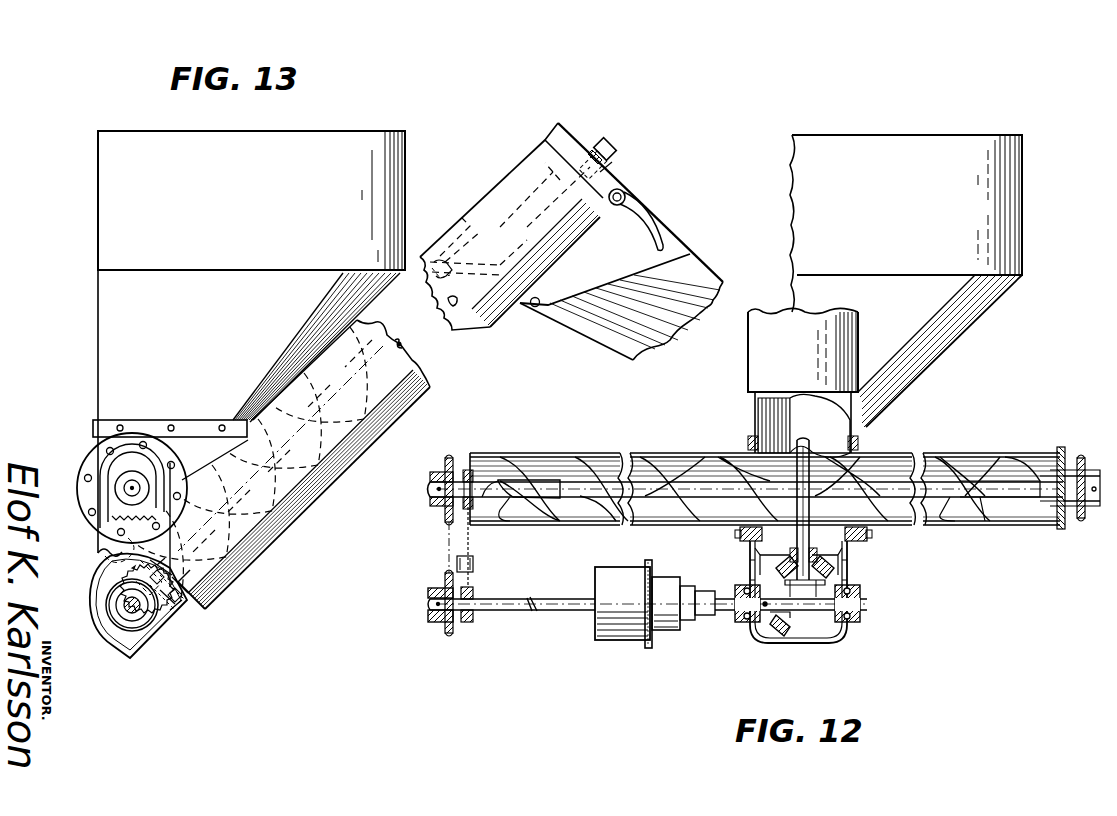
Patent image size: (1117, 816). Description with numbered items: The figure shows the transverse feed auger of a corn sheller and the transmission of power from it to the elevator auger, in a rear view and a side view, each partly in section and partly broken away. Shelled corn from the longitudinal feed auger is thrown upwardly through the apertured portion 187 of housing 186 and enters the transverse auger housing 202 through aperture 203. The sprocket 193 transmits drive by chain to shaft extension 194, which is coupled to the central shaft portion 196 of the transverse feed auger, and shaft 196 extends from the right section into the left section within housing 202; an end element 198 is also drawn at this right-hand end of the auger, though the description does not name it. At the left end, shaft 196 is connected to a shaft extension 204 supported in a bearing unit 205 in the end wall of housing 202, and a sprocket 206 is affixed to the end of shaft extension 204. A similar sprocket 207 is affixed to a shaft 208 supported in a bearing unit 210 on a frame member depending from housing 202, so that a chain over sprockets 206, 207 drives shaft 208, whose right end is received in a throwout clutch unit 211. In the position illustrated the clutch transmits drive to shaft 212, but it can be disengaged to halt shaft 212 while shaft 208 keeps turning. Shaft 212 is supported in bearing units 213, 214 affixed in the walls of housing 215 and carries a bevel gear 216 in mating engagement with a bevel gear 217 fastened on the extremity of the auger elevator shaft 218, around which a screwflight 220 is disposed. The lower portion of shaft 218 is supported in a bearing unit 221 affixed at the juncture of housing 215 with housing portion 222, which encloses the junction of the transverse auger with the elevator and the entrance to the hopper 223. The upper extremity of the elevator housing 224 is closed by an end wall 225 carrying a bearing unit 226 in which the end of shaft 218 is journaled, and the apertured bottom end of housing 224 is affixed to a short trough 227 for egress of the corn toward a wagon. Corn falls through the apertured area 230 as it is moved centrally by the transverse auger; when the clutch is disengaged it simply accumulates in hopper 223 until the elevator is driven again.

In FIG. 12, the housing 186 is at (988, 455).
In FIG. 12, the apertured portion 187 is at (995, 512).
In FIG. 12, the sprocket 193 is at (1085, 462).
In FIG. 12, the shaft extension 194 is at (1040, 497).
In FIG. 12, the central shaft portion 196 is at (652, 456).
In FIG. 12, the end plate 198 is at (1058, 460).
In FIG. 12, the housing 202 is at (552, 456).
In FIG. 12, the aperture 203 is at (535, 505).
In FIG. 12, the shaft extension 204 is at (500, 468).
In FIG. 12, the bearing unit 205 is at (455, 470).
In FIG. 13, the sprocket 206 is at (108, 478).
In FIG. 12, the sprocket 206 is at (445, 512).
In FIG. 12, the sprocket 207 is at (449, 637).
In FIG. 13, the shaft 208 is at (120, 625).
In FIG. 12, the shaft 208 is at (548, 609).
In FIG. 12, the bearing unit 210 is at (478, 588).
In FIG. 12, the throwout clutch unit 211 is at (628, 640).
In FIG. 12, the shaft 212 is at (720, 605).
In FIG. 12, the bearing unit 213 is at (745, 625).
In FIG. 12, the bearing unit 214 is at (852, 625).
In FIG. 12, the housing 215 is at (818, 642).
In FIG. 13, the bevel gear 216 is at (152, 640).
In FIG. 12, the bevel gear 216 is at (780, 632).
In FIG. 13, the bevel gear 217 is at (180, 612).
In FIG. 12, the bevel gear 217 is at (825, 580).
In FIG. 13, the auger elevator shaft 218 is at (340, 470).
In FIG. 12, the auger elevator shaft 218 is at (818, 440).
In FIG. 13, the screwflight 220 is at (428, 383).
In FIG. 12, the screwflight 220 is at (872, 450).
In FIG. 13, the bearing unit 221 is at (215, 600).
In FIG. 12, the bearing unit 221 is at (848, 565).
In FIG. 12, the housing portion 222 is at (752, 541).
In FIG. 13, the hopper 223 is at (95, 228).
In FIG. 12, the hopper 223 is at (948, 350).
In FIG. 13, the elevator housing 224 is at (374, 444).
In FIG. 13, the end wall 225 is at (563, 120).
In FIG. 13, the bearing unit 226 is at (622, 168).
In FIG. 13, the short trough 227 is at (700, 253).
In FIG. 13, the apertured area 230 is at (97, 547).